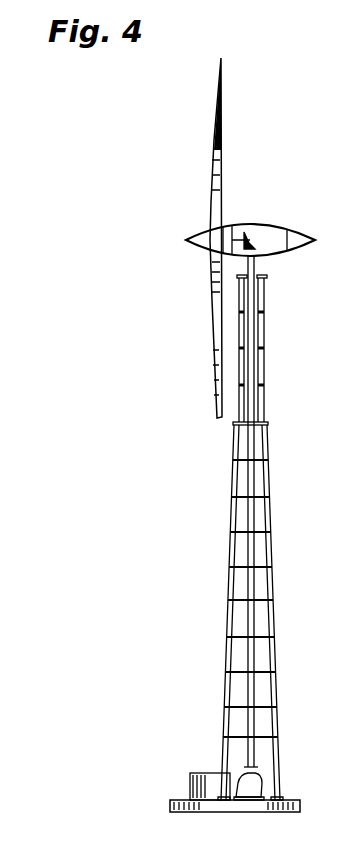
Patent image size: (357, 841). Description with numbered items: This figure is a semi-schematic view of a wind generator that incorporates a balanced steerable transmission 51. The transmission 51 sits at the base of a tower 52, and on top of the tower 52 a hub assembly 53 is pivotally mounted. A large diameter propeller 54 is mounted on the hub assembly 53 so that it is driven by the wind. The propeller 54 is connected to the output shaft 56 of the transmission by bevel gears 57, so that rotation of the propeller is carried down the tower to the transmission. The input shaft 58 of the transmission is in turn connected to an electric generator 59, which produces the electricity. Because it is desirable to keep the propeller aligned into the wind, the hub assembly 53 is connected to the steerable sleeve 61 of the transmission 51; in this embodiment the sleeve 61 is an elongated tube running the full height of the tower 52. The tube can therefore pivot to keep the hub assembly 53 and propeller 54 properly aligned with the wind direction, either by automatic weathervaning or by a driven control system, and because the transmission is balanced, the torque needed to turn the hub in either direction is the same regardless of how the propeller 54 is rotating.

The balanced steerable transmission 51 is at (257, 778).
The tower 52 is at (227, 673).
The hub assembly 53 is at (246, 224).
The propeller 54 is at (212, 185).
The output shaft 56 is at (255, 480).
The bevel gears 57 is at (254, 244).
The input shaft 58 is at (226, 800).
The electric generator 59 is at (200, 773).
The steerable sleeve 61 is at (256, 264).